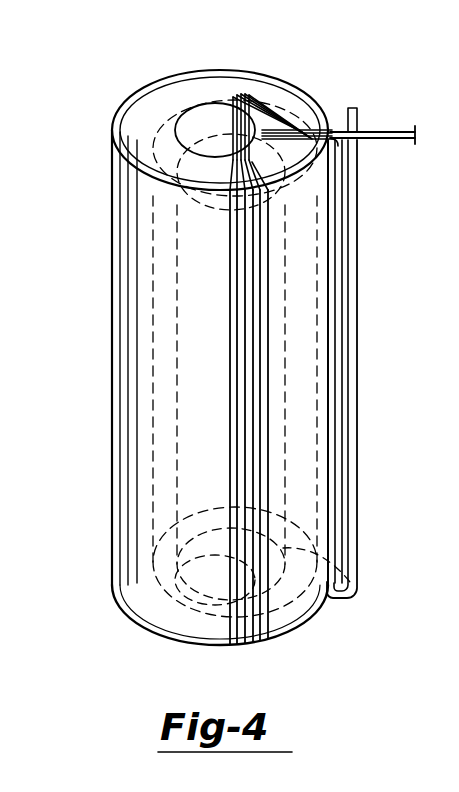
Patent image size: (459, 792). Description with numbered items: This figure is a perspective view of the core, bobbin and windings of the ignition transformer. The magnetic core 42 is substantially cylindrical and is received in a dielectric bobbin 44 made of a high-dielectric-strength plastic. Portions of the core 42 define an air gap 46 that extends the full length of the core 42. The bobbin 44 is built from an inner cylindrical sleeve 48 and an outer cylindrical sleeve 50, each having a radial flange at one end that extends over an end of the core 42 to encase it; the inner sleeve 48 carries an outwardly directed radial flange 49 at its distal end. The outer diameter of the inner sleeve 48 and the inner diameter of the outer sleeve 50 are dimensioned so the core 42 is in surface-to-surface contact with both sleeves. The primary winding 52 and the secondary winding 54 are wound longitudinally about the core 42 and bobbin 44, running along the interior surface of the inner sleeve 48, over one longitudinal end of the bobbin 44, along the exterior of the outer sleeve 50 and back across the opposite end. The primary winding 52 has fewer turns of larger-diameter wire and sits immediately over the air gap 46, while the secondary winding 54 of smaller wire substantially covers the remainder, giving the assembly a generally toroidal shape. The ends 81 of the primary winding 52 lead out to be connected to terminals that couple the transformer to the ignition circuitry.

The magnetic core 42 is at (302, 272).
The dielectric bobbin 44 is at (182, 97).
The air gap 46 is at (360, 582).
The inner cylindrical sleeve 48 is at (163, 293).
The outwardly directed radial flange 49 is at (163, 117).
The outer cylindrical sleeve 50 is at (323, 418).
The primary winding 52 is at (306, 112).
The secondary winding 54 is at (255, 73).
The ends of the primary winding 81 is at (358, 112).